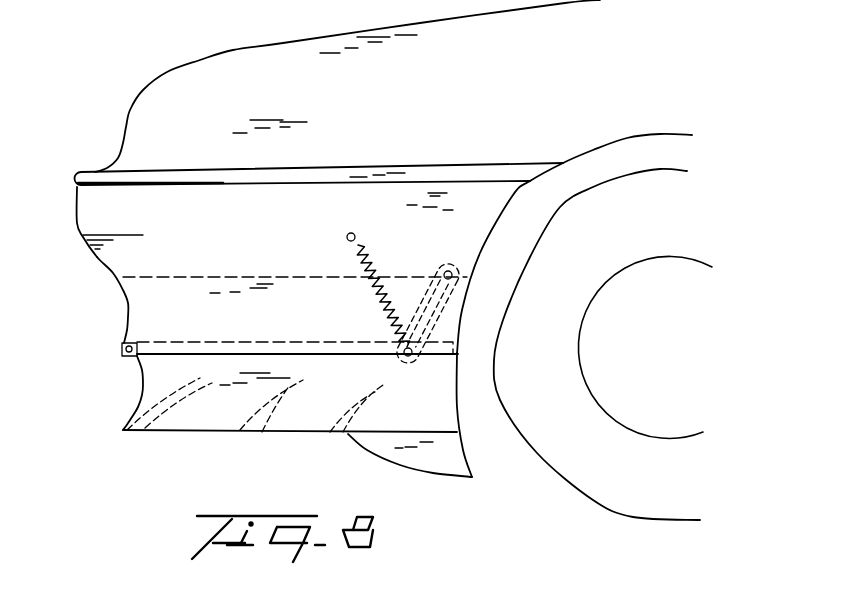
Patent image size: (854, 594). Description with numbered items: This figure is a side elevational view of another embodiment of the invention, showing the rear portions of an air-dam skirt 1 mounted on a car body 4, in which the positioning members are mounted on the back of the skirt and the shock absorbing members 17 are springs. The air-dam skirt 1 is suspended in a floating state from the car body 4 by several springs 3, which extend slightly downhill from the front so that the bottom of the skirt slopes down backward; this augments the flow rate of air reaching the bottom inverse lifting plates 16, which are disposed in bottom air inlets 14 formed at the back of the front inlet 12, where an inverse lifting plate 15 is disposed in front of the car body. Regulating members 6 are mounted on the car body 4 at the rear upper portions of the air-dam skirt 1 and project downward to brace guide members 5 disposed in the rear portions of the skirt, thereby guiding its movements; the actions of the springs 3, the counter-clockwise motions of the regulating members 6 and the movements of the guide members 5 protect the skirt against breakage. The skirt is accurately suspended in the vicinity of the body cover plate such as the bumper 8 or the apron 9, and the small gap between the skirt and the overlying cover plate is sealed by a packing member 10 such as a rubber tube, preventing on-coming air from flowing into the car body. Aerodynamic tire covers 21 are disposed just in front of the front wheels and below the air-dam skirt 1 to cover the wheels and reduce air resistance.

The air-dam skirt 1 is at (225, 415).
The springs 3 is at (368, 267).
The car body 4 is at (467, 207).
The guide members 5 is at (409, 356).
The regulating members 6 is at (428, 290).
The bumper 8 is at (78, 223).
The apron 9 is at (127, 305).
The packing member 10 is at (122, 352).
The front inlet 12 is at (133, 388).
The bottom air inlets 14 is at (182, 435).
The inverse lifting plate 15 is at (137, 435).
The bottom inverse lifting plates 16 is at (268, 432).
The shock absorbing members 17 is at (348, 240).
The aerodynamic tire covers 21 is at (440, 460).